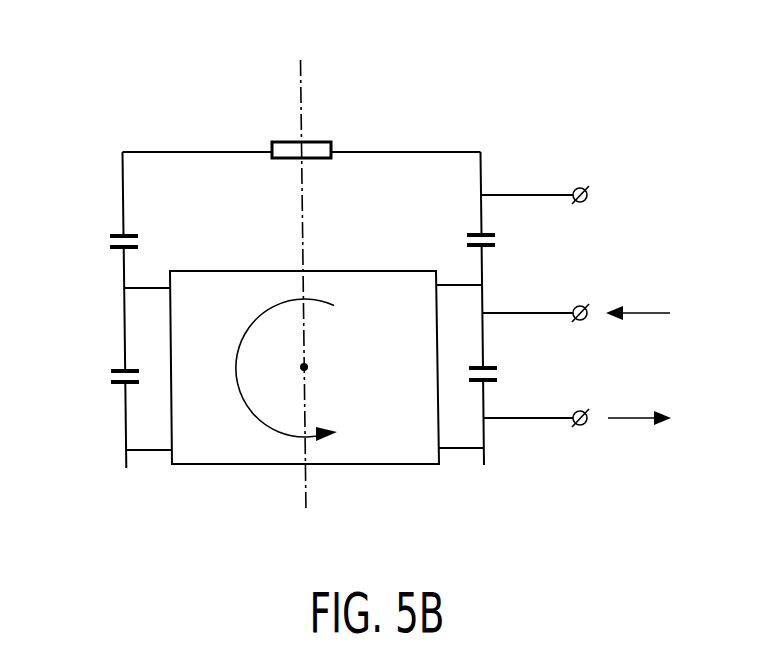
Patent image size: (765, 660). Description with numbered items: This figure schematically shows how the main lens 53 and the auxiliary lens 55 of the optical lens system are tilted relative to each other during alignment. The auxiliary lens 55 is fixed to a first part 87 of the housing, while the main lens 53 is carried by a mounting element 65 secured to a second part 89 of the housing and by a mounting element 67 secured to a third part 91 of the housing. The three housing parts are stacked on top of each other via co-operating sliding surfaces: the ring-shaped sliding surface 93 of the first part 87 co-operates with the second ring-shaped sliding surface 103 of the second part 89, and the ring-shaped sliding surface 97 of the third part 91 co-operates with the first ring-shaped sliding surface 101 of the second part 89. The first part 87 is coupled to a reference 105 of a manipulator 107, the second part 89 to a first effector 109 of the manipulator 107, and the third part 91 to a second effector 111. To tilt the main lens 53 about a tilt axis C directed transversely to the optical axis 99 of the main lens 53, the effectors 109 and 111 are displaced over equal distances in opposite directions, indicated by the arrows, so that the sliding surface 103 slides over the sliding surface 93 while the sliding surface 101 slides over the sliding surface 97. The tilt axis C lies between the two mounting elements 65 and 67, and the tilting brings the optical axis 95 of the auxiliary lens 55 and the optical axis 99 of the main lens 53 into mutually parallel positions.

The main lens 53 is at (385, 453).
The auxiliary lens 55 is at (317, 148).
The mounting element 65 is at (154, 286).
The mounting element 67 is at (151, 452).
The first part of the housing 87 is at (123, 197).
The second part of the housing 89 is at (124, 323).
The third part of the housing 91 is at (125, 413).
The ring-shaped sliding surface 93 is at (487, 231).
The optical axis of the auxiliary lens 95 is at (296, 77).
The ring-shaped sliding surface 97 is at (487, 384).
The optical axis of the main lens 99 is at (306, 342).
The first ring-shaped sliding surface 101 is at (487, 364).
The second ring-shaped sliding surface 103 is at (487, 250).
The reference 105 is at (588, 195).
The manipulator 107 is at (580, 306).
The first effector 109 is at (576, 310).
The second effector 111 is at (588, 428).